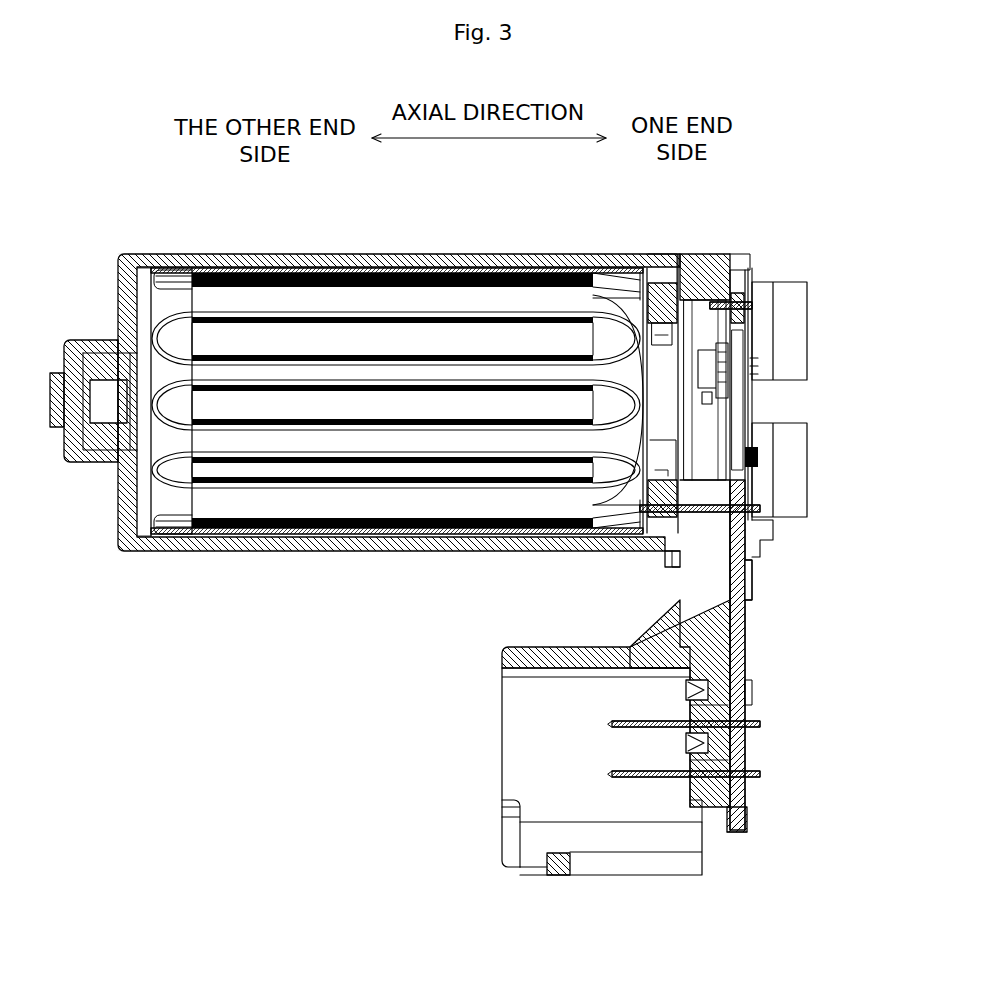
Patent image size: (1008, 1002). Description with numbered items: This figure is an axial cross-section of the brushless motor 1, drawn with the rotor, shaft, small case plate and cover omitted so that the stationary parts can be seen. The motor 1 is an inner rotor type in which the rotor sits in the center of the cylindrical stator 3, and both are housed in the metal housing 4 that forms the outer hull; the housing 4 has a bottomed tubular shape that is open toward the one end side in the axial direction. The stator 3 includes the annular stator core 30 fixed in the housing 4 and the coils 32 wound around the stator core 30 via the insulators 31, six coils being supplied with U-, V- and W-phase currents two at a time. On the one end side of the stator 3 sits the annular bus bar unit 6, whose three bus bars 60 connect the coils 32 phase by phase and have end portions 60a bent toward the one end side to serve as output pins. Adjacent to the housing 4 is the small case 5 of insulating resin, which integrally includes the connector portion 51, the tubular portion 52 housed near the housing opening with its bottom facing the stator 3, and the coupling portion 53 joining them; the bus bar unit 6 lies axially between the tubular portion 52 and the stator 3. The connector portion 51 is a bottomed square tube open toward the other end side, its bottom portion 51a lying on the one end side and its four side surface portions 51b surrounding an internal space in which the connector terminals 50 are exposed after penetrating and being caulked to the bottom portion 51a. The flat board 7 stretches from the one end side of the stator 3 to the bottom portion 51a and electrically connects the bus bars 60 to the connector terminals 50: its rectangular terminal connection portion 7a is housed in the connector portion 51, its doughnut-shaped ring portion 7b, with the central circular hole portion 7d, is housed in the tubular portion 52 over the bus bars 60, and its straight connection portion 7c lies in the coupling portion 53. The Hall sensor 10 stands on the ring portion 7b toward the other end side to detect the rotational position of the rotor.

The brushless motor 1 is at (822, 202).
The stator 3 is at (146, 496).
The housing 4 is at (364, 256).
The small case 5 is at (728, 835).
The bus bar unit 6 is at (665, 263).
The board 7 is at (752, 645).
The terminal connection portion 7a is at (751, 693).
The ring portion 7b is at (752, 303).
The connection portion 7c is at (752, 585).
The circular hole portion 7d is at (740, 410).
The Hall sensor 10 is at (722, 370).
The stator core 30 is at (240, 336).
The insulator 31 is at (188, 528).
The coil 32 is at (172, 292).
The connector terminal 50 is at (608, 772).
The connector portion 51 is at (497, 788).
The bottom portion 51a is at (747, 753).
The side surface portion 51b is at (546, 647).
The tubular portion 52 is at (691, 268).
The coupling portion 53 is at (681, 578).
The bus bar 60 is at (775, 527).
The end portion 60a is at (762, 509).